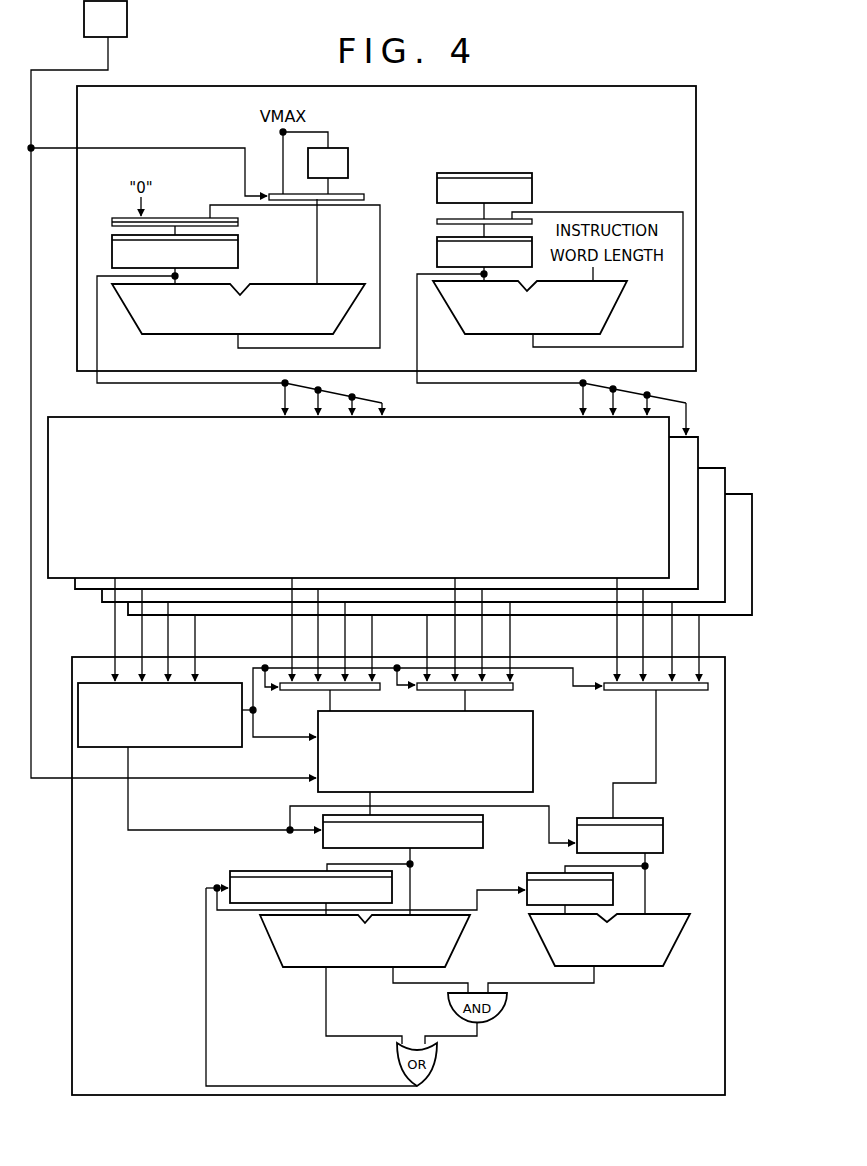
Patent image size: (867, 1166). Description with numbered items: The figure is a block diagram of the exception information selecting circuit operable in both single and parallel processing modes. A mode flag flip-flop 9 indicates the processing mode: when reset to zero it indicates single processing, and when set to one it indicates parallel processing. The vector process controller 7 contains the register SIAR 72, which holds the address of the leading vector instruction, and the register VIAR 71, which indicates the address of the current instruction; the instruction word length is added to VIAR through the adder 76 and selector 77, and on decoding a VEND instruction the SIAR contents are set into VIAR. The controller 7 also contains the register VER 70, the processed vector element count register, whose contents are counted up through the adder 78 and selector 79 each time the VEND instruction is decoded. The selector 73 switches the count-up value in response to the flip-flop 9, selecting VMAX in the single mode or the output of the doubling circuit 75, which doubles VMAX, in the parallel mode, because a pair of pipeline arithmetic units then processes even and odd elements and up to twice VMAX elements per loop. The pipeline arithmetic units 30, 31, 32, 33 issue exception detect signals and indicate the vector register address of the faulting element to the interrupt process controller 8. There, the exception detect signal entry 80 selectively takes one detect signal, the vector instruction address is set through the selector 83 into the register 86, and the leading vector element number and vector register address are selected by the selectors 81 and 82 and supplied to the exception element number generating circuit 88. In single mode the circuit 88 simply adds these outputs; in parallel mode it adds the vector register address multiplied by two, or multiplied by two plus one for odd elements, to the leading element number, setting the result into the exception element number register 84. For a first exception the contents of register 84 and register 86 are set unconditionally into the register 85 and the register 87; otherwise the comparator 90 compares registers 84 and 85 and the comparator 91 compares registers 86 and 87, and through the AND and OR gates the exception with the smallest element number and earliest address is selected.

The vector process controller 7 is at (696, 343).
The interrupt process controller 8 is at (725, 1058).
The mode flag flip-flop 9 is at (127, 14).
The pipeline arithmetic unit 30 is at (669, 427).
The pipeline arithmetic unit 31 is at (698, 458).
The pipeline arithmetic unit 32 is at (725, 485).
The pipeline arithmetic unit 33 is at (752, 528).
The register VER 70 is at (238, 250).
The register VIAR 71 is at (437, 247).
The register SIAR 72 is at (532, 188).
The selector 73 is at (364, 197).
The doubling circuit 75 is at (348, 163).
The adder 76 is at (455, 318).
The selector 77 is at (437, 221).
The adder 78 is at (128, 312).
The selector 79 is at (196, 216).
The exception detect signal entry 80 is at (218, 748).
The selector 81 is at (297, 692).
The selector 82 is at (513, 688).
The selector 83 is at (665, 692).
The exception element number register 84 is at (483, 833).
The register 85 is at (244, 870).
The register 86 is at (663, 838).
The register 87 is at (527, 900).
The exception element number generating circuit 88 is at (533, 753).
The comparator 90 is at (462, 946).
The comparator 91 is at (678, 944).